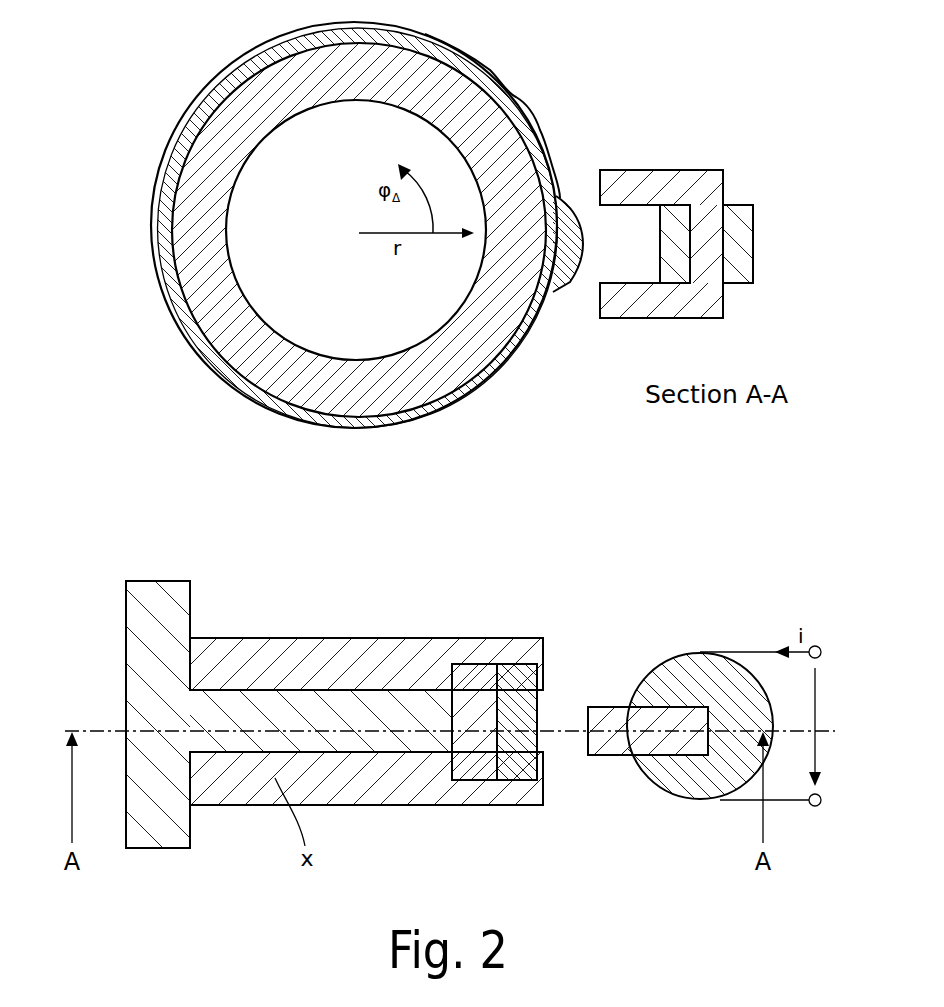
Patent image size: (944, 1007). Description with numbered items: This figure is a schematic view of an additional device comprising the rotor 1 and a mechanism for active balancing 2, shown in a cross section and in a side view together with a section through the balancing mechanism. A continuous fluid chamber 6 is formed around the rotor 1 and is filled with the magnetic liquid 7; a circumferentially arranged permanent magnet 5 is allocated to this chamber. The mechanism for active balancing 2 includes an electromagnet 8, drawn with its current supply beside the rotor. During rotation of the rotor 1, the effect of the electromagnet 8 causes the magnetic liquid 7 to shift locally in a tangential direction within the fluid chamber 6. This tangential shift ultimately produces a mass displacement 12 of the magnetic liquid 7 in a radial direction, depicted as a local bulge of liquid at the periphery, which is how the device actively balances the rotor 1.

The rotor 1 is at (290, 288).
The mechanism for active balancing 2 is at (573, 158).
The permanent magnet 5 is at (200, 214).
The fluid chamber 6 is at (478, 65).
The magnetic liquid 7 is at (220, 78).
The electromagnet 8 is at (740, 237).
The mass displacement 12 is at (568, 282).